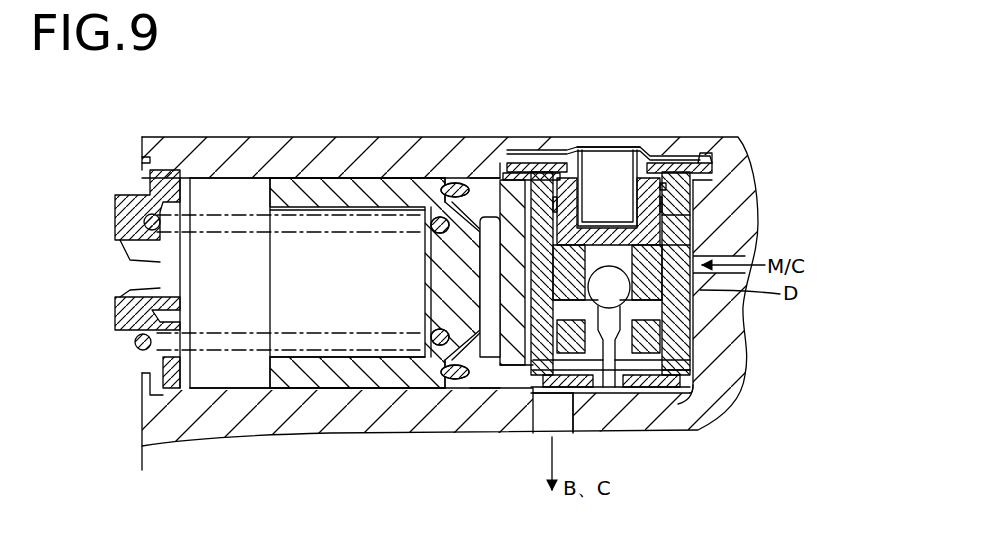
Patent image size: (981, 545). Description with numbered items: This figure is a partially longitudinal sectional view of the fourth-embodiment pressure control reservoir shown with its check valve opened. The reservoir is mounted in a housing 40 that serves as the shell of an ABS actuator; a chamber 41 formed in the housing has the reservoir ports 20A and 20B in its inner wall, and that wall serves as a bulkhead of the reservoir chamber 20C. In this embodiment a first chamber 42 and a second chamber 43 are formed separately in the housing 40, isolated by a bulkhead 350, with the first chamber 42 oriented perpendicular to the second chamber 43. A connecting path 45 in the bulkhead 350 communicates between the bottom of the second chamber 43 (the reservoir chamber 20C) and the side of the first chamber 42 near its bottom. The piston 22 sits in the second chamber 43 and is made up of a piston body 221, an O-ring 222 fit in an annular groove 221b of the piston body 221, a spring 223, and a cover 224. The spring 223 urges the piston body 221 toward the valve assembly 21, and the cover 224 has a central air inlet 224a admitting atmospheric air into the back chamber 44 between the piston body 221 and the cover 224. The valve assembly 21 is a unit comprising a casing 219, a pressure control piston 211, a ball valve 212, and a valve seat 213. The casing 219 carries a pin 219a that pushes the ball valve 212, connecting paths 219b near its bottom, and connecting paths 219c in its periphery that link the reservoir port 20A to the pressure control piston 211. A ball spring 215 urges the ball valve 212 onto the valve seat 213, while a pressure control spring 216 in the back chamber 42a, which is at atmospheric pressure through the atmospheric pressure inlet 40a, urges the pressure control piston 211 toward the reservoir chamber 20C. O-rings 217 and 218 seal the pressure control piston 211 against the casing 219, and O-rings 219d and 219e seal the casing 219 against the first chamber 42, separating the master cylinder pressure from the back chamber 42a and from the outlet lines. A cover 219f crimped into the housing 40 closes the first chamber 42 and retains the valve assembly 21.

The housing 40 is at (346, 152).
The chamber 41 is at (243, 172).
The second chamber 43 is at (220, 392).
The reservoir chamber 20C is at (410, 392).
The pressure control piston 211 is at (535, 172).
The cover 224 is at (118, 228).
The back chamber 44 is at (213, 260).
The air inlet 224a is at (125, 300).
The spring 223 is at (135, 345).
The piston 22 is at (278, 378).
The piston body 221 is at (318, 378).
The bulkhead 350 is at (497, 235).
The ball valve 212 is at (515, 280).
The O-ring 222 is at (447, 380).
The annular groove 221b is at (470, 392).
The connecting path 45 is at (505, 392).
The casing 219 is at (705, 160).
The connecting paths 219b is at (706, 390).
The pressure control spring 216 is at (582, 143).
The ball spring 215 is at (593, 143).
The atmospheric pressure inlet 40a is at (606, 230).
The back chamber 42a is at (627, 145).
The cover 219f is at (645, 145).
The valve assembly 21 is at (680, 165).
The O-ring 218 is at (693, 186).
The O-ring 219d is at (700, 222).
The connecting paths 219c is at (700, 248).
The reservoir port 20A is at (700, 318).
The O-ring 217 is at (692, 344).
The reservoir port 20B is at (577, 395).
The O-ring 219e is at (695, 369).
The pin 219a is at (637, 405).
The valve seat 213 is at (532, 405).
The first chamber 42 is at (690, 408).